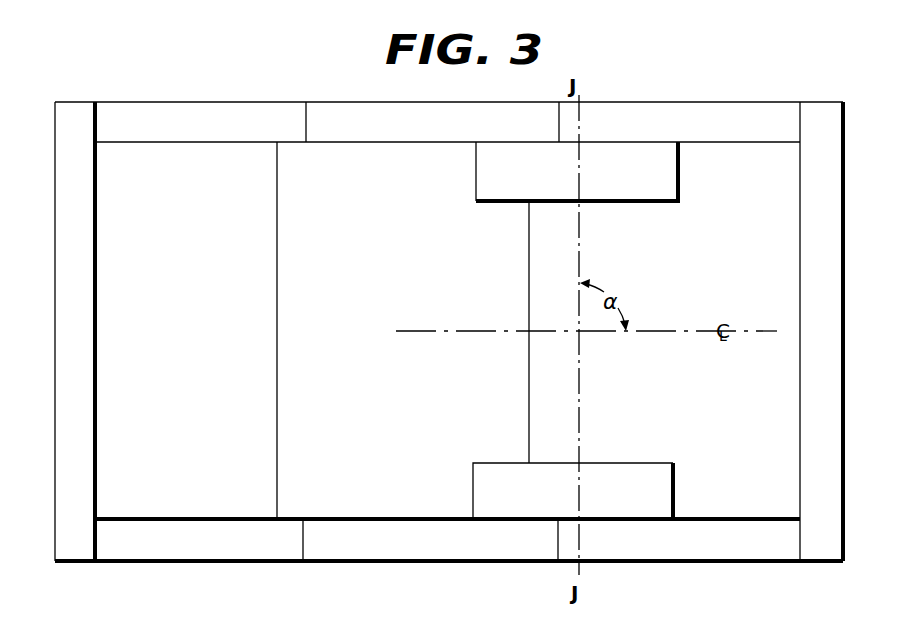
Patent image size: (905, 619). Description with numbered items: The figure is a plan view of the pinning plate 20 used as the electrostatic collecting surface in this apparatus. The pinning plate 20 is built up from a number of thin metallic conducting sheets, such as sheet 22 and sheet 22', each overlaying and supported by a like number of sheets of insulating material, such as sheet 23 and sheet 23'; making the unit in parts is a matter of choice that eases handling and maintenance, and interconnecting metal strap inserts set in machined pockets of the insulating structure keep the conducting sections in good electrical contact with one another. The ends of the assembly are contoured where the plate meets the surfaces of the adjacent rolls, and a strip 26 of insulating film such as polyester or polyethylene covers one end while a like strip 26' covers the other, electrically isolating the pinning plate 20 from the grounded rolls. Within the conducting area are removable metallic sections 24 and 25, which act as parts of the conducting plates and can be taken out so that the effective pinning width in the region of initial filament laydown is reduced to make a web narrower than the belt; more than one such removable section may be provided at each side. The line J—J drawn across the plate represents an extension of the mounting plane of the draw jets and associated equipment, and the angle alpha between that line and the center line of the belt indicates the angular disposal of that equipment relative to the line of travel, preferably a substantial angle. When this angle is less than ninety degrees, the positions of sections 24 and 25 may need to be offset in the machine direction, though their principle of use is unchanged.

The pinning plate 20 is at (336, 98).
The metallic conducting sheet 22 is at (221, 330).
The metallic conducting sheet 22' is at (416, 381).
The insulating sheet 23 is at (200, 103).
The insulating sheet 23' is at (432, 109).
The removable metallic section 24 is at (447, 491).
The removable metallic section 25 is at (577, 171).
The insulating film strip 26 is at (814, 353).
The insulating film strip 26' is at (82, 352).